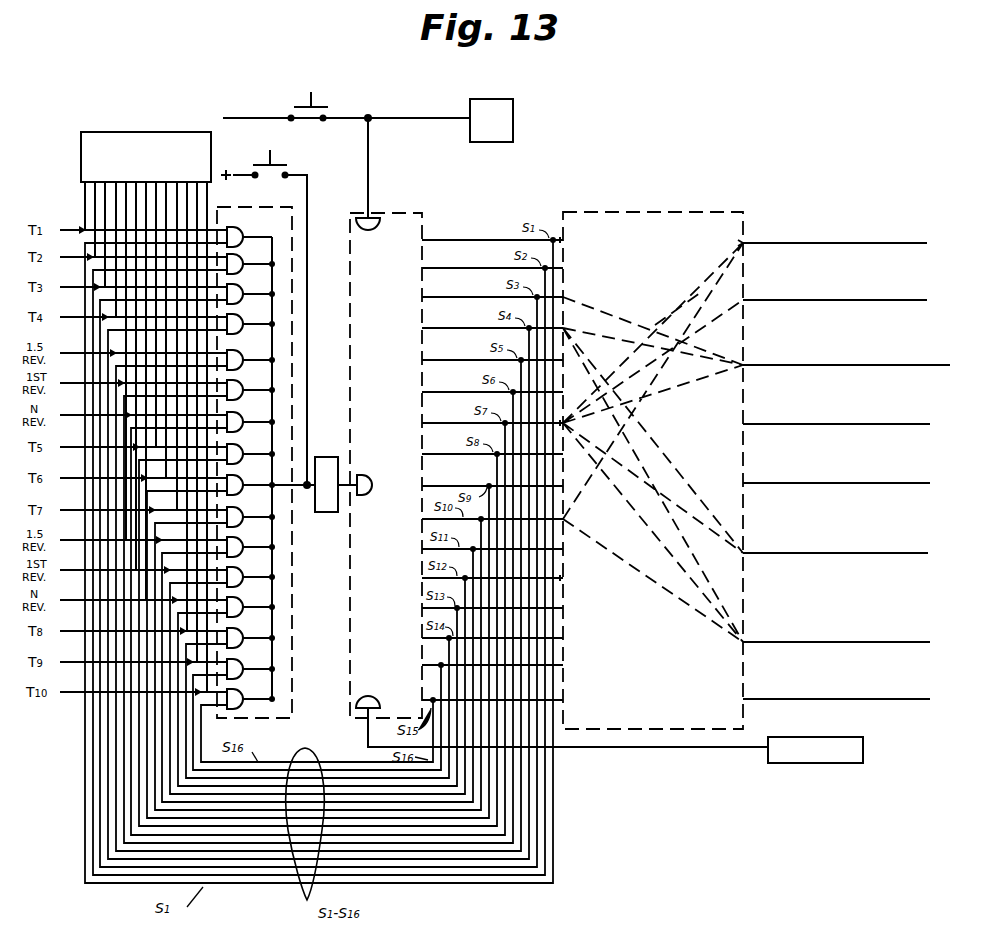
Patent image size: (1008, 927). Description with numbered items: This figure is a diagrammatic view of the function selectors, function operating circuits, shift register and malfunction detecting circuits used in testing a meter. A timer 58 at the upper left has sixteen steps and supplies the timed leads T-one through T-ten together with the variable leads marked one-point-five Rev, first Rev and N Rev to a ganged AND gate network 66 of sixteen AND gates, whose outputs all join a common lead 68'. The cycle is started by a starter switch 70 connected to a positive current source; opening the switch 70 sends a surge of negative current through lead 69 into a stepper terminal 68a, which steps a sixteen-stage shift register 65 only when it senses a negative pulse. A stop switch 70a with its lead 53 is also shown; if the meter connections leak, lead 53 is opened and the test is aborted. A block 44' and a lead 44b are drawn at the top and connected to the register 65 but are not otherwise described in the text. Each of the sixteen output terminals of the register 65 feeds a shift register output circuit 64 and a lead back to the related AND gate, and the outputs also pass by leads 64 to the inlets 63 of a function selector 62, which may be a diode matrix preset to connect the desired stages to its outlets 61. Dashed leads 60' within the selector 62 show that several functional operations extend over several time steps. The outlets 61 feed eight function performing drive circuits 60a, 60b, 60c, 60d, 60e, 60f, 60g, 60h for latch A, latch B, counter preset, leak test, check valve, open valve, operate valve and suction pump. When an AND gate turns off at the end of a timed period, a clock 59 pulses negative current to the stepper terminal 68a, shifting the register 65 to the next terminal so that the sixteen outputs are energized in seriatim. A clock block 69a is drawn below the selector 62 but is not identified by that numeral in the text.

The timer 58 is at (140, 132).
The stop switch 70a is at (330, 93).
The lead 53 is at (257, 119).
The starter switch 70 is at (275, 160).
The control block 44' is at (443, 104).
The reset line 44b is at (371, 168).
The shift register 65 is at (420, 214).
The ganged AND gate network 66 is at (282, 206).
The common lead 68' is at (309, 468).
The lead 69 is at (308, 377).
The clock 59 is at (327, 457).
The stepper terminal 68a is at (360, 497).
The shift register output circuits 64 is at (475, 390).
The inlets 63 is at (565, 240).
The function selector 62 is at (665, 210).
The outlets 61 is at (738, 243).
The leads 60' is at (663, 300).
The function performing drive circuit 60a is at (856, 246).
The function performing drive circuit 60b is at (830, 303).
The function performing drive circuit 60c is at (874, 368).
The function performing drive circuit 60d is at (903, 428).
The function performing drive circuit 60e is at (905, 486).
The function performing drive circuit 60f is at (803, 557).
The function performing drive circuit 60g is at (875, 647).
The function performing drive circuit 60h is at (918, 703).
The clock 69a is at (846, 765).